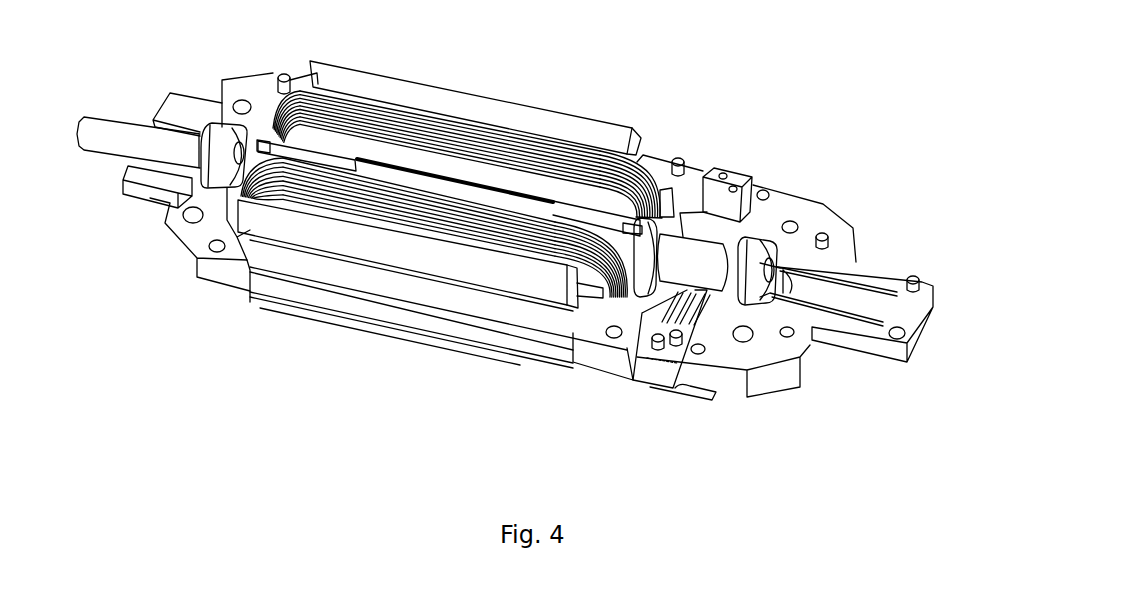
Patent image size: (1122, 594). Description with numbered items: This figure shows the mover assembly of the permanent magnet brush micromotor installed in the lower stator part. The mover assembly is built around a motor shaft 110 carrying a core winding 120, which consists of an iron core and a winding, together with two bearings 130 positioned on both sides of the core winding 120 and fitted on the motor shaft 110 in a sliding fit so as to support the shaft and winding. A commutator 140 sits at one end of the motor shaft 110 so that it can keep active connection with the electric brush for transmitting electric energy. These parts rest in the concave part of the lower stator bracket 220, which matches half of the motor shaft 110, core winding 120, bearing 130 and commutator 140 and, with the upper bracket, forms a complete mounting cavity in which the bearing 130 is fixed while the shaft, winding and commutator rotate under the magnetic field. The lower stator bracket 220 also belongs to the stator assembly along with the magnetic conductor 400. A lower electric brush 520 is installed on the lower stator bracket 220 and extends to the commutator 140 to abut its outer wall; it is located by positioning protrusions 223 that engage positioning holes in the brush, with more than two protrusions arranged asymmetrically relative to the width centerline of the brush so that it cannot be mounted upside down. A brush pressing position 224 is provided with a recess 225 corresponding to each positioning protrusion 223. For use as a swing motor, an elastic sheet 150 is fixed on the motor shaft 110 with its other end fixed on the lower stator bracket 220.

The motor shaft 110 is at (175, 145).
The core winding 120 is at (517, 178).
The bearing 130 is at (227, 128).
The commutator 140 is at (712, 253).
The elastic sheet 150 is at (827, 293).
The lower stator bracket 220 is at (205, 228).
The positioning protrusion 223 is at (747, 395).
The brush pressing position 224 is at (756, 147).
The recess 225 is at (732, 187).
The magnetic conductor 400 is at (437, 337).
The lower electric brush 520 is at (665, 373).